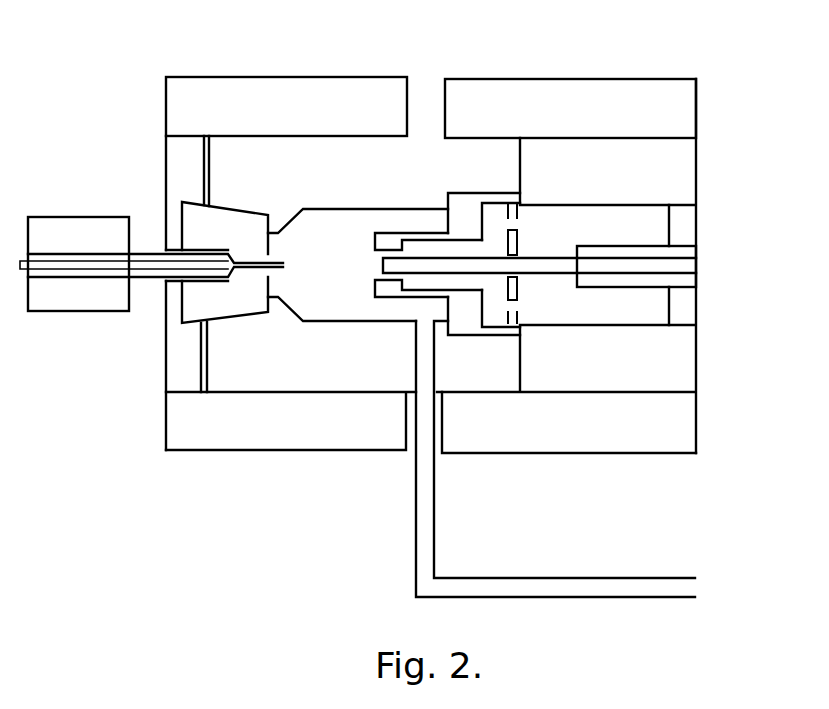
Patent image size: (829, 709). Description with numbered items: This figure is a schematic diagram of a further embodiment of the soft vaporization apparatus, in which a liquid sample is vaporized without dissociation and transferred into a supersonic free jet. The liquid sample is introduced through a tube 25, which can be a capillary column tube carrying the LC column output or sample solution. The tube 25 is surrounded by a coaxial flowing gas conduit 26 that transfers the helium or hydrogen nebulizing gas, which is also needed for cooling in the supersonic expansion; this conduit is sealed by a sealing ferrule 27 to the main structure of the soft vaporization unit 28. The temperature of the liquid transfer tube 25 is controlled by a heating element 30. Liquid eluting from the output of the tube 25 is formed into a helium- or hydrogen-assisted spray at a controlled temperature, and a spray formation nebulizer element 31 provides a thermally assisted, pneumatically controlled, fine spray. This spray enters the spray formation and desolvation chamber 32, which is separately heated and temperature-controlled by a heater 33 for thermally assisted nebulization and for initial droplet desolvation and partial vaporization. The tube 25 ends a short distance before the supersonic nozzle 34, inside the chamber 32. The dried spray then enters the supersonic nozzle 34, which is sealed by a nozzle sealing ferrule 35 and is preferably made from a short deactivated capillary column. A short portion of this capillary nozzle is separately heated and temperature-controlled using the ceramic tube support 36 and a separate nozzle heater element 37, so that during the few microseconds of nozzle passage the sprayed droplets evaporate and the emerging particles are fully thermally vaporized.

The tube 25 is at (542, 253).
The coaxial flowing gas conduit 26 is at (655, 245).
The sealing ferrule 27 is at (678, 312).
The soft vaporization unit 28 is at (662, 352).
The heating element 30 is at (668, 418).
The spray formation nebulizer element 31 is at (472, 227).
The spray formation and desolvation chamber 32 is at (345, 246).
The heater 33 is at (237, 100).
The supersonic nozzle 34 is at (145, 268).
The nozzle sealing ferrule 35 is at (240, 297).
The ceramic tube support 36 is at (151, 248).
The nozzle heater element 37 is at (83, 225).